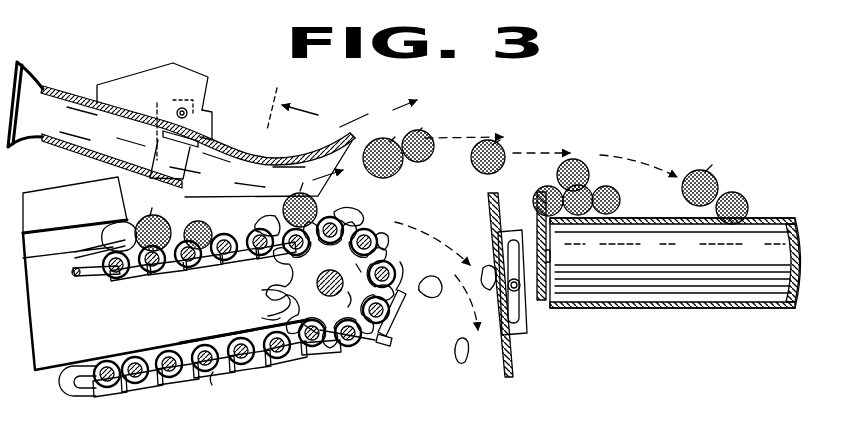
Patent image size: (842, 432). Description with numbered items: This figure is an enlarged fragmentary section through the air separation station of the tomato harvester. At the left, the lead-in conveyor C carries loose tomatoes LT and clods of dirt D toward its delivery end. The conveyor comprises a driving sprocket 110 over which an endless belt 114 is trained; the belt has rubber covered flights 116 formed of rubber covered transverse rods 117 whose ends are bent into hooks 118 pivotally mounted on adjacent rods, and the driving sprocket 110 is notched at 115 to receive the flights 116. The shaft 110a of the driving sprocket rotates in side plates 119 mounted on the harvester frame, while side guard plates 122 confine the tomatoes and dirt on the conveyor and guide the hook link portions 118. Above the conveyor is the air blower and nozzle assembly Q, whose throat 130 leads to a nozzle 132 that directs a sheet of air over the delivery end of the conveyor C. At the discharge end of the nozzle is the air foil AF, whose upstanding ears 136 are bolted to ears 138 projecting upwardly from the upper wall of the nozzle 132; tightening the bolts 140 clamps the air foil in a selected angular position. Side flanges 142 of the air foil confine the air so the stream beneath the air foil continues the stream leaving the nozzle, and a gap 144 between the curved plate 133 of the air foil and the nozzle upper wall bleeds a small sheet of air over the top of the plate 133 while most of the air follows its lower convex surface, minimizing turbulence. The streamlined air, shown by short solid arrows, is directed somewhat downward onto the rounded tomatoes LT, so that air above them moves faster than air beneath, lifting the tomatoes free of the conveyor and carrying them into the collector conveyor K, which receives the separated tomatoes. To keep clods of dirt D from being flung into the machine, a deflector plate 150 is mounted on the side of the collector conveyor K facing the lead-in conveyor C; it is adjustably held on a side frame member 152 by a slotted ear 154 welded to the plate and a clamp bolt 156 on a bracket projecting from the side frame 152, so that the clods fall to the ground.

The air blower and nozzle assembly Q is at (80, 62).
The throat 130 is at (13, 150).
The nozzle 132 is at (50, 88).
The curved plate of the air foil 133 is at (340, 134).
The upstanding ears of the air foil 136 is at (210, 105).
The ears projecting from the nozzle upper wall 138 is at (143, 72).
The bolts 140 is at (177, 112).
The side flanges of the air foil 142 is at (200, 190).
The gap 144 is at (193, 128).
The air foil plate AF is at (328, 142).
The loose tomatoes LT is at (405, 133).
The clods of dirt D is at (455, 345).
The side guard plates 122 is at (70, 217).
The side plates 119 is at (153, 330).
The lead-in conveyor C is at (198, 393).
The hooks 118 is at (122, 397).
The rubber covered transverse rods 117 is at (213, 381).
The endless belt 114 is at (300, 374).
The rubber covered flights 116 is at (318, 359).
The driving sprocket 110 is at (374, 337).
The shaft 110a is at (255, 302).
The notches 115 is at (263, 318).
The deflector plate 150 is at (510, 372).
The side frame member 152 is at (543, 302).
The slotted ear 154 is at (522, 336).
The clamp bolt 156 is at (510, 288).
The collector conveyor K is at (672, 306).